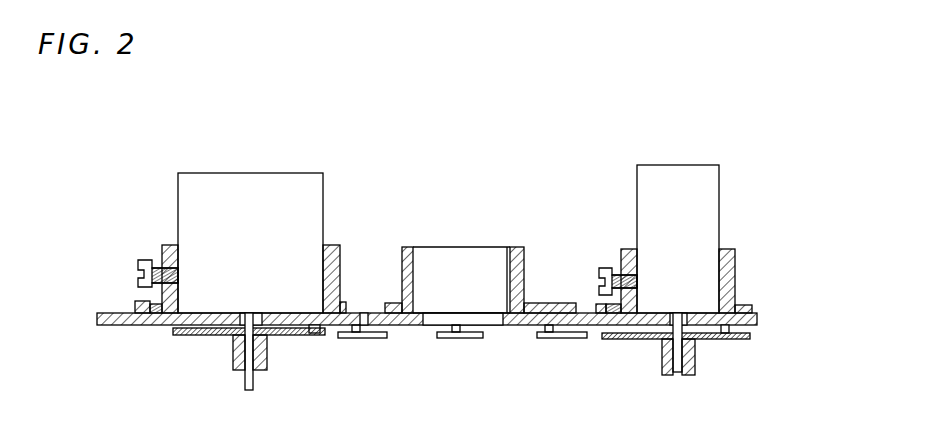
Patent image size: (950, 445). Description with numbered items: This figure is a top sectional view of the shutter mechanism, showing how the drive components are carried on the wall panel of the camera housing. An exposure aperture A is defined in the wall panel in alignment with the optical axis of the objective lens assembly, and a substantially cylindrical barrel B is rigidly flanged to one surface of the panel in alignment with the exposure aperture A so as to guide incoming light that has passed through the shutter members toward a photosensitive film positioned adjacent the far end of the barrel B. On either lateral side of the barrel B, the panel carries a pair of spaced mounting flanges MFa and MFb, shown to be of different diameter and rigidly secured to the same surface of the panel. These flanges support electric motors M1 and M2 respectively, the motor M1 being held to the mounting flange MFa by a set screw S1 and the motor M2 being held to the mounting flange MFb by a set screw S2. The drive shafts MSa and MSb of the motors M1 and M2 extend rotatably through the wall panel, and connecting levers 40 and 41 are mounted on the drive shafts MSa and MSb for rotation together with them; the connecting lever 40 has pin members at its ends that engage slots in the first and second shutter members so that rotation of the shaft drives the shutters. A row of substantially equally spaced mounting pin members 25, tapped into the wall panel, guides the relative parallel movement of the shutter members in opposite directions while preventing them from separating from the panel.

The electric motor M1 is at (257, 190).
The electric motor M2 is at (667, 185).
The mounting flange MFa is at (160, 258).
The mounting flange MFb is at (736, 265).
The set screw S1 is at (140, 266).
The set screw S2 is at (603, 276).
The drive shaft MSa is at (246, 383).
The drive shaft MSb is at (675, 375).
The exposure aperture A is at (455, 318).
The cylindrical barrel B is at (525, 270).
The mounting pin members 25 is at (365, 338).
The connecting lever 40 is at (180, 336).
The connecting lever 41 is at (630, 340).